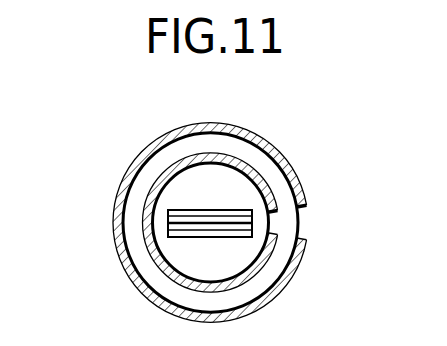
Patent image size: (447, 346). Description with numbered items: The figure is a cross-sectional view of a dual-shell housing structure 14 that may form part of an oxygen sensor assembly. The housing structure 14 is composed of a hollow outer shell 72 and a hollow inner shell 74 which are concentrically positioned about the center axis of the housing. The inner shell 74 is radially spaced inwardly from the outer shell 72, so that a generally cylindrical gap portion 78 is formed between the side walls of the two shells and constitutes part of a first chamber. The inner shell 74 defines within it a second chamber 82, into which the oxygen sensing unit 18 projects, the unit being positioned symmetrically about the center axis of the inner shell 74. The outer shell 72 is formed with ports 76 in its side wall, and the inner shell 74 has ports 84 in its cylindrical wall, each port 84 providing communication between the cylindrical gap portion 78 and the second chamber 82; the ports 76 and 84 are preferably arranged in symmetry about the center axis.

The housing structure 14 is at (118, 167).
The oxygen sensing unit 18 is at (223, 238).
The outer shell 72 is at (277, 146).
The inner shell 74 is at (143, 215).
The ports 76 is at (305, 212).
The cylindrical gap portion 78 is at (145, 265).
The second chamber 82 is at (180, 185).
The ports 84 is at (272, 231).